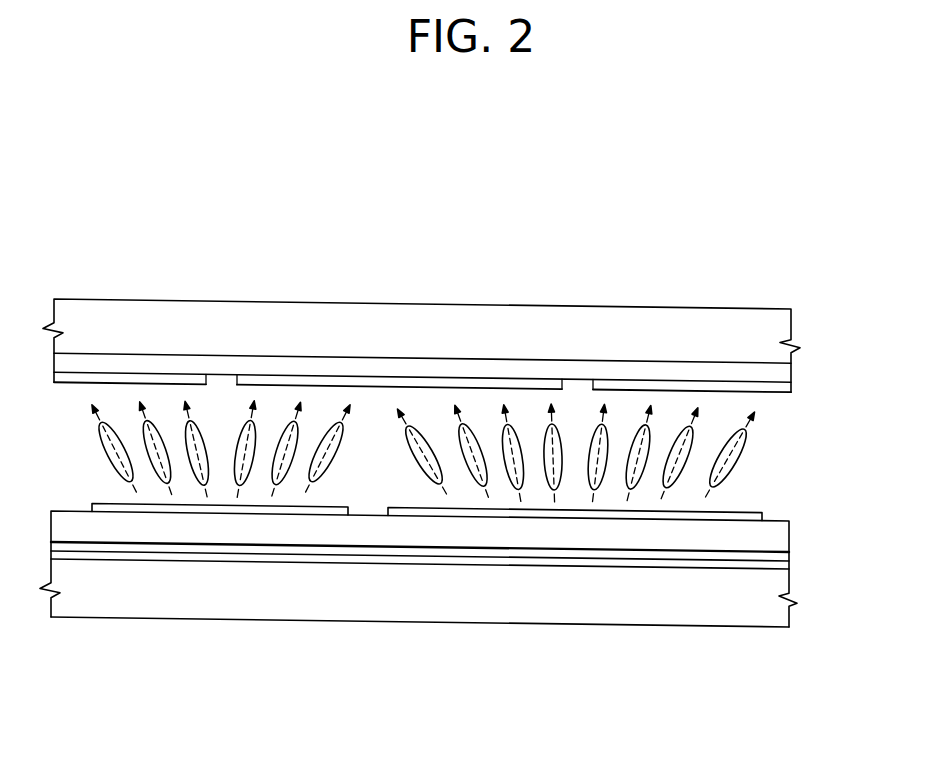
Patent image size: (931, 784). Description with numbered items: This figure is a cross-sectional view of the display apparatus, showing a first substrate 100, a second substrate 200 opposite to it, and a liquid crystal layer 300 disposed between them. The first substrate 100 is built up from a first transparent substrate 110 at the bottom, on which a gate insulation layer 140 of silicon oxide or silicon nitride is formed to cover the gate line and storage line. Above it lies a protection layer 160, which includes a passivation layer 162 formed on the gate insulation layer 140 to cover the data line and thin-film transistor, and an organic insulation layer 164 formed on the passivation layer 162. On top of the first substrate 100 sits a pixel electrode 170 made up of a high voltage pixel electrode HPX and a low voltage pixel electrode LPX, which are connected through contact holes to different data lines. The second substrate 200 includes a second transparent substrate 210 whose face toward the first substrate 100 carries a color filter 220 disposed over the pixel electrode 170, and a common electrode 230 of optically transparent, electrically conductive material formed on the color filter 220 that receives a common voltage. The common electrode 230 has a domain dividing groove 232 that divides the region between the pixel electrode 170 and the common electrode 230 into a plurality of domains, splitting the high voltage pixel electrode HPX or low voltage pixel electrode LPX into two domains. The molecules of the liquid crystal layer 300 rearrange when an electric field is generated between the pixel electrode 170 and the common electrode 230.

The first substrate 100 is at (795, 506).
The first transparent substrate 110 is at (92, 602).
The gate insulation layer 140 is at (147, 557).
The protection layer 160 is at (297, 671).
The passivation layer 162 is at (220, 550).
The organic insulation layer 164 is at (278, 537).
The pixel electrode 170 is at (420, 674).
The high voltage pixel electrode HPX is at (333, 513).
The low voltage pixel electrode LPX is at (410, 513).
The second substrate 200 is at (798, 306).
The second transparent substrate 210 is at (410, 327).
The color filter 220 is at (502, 366).
The common electrode 230 is at (316, 388).
The domain dividing groove 232 is at (225, 386).
The liquid crystal layer 300 is at (742, 462).